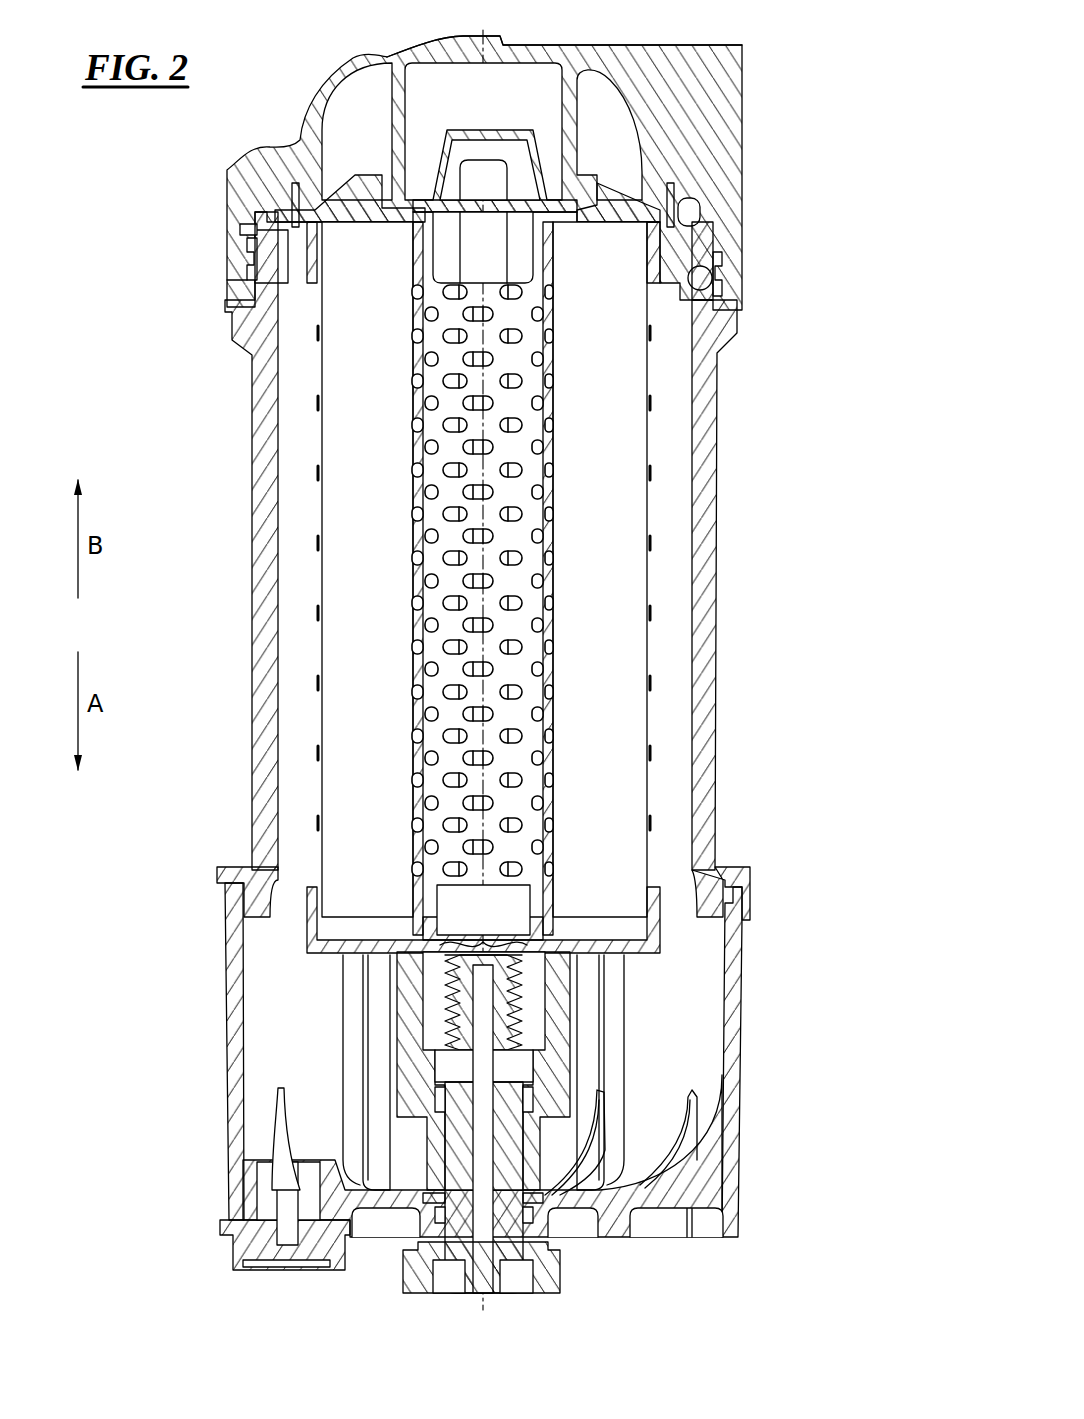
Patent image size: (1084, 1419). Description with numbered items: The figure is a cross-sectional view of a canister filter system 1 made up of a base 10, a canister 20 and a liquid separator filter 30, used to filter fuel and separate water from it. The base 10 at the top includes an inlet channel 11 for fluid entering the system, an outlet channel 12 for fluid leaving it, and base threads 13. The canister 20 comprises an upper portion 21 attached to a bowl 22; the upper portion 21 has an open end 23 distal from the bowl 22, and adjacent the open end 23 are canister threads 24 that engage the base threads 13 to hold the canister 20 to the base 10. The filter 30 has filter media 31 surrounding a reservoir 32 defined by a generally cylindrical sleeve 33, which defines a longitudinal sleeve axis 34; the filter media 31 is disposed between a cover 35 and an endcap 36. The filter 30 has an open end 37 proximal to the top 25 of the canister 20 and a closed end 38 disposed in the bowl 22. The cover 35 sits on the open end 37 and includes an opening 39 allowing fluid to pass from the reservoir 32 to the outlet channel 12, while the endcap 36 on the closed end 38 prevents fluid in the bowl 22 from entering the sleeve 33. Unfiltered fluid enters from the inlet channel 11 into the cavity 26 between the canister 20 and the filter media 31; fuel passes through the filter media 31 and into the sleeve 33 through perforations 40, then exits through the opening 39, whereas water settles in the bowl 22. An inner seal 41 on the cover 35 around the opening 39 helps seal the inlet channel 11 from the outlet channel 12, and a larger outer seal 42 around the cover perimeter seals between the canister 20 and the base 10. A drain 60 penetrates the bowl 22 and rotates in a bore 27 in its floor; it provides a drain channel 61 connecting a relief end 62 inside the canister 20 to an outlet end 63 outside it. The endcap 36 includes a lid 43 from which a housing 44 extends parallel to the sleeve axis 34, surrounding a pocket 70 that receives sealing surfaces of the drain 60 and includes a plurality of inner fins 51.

The canister filter system 1 is at (634, 30).
The base 10 is at (389, 61).
The inlet channel 11 is at (355, 135).
The outlet channel 12 is at (545, 105).
The base threads 13 is at (700, 298).
The canister 20 is at (460, 613).
The upper portion 21 is at (260, 705).
The bowl 22 is at (237, 985).
The open end 23 is at (258, 238).
The canister threads 24 is at (258, 278).
The top 25 is at (260, 232).
The cavity 26 is at (300, 600).
The bore 27 is at (510, 1226).
The liquid separator filter 30 is at (656, 407).
The filter media 31 is at (598, 640).
The reservoir 32 is at (525, 688).
The sleeve 33 is at (553, 548).
The longitudinal sleeve axis 34 is at (490, 122).
The cover 35 is at (585, 183).
The endcap 36 is at (662, 942).
The open end 37 is at (318, 200).
The closed end 38 is at (350, 1087).
The opening 39 is at (533, 155).
The perforations 40 is at (518, 590).
The inner seal 41 is at (360, 182).
The outer seal 42 is at (686, 205).
The lid 43 is at (632, 947).
The housing 44 is at (573, 1067).
The inner fins 51 is at (410, 1038).
The drain 60 is at (526, 1147).
The drain channel 61 is at (478, 1148).
The relief end 62 is at (489, 960).
The outlet end 63 is at (492, 1295).
The pocket 70 is at (450, 963).